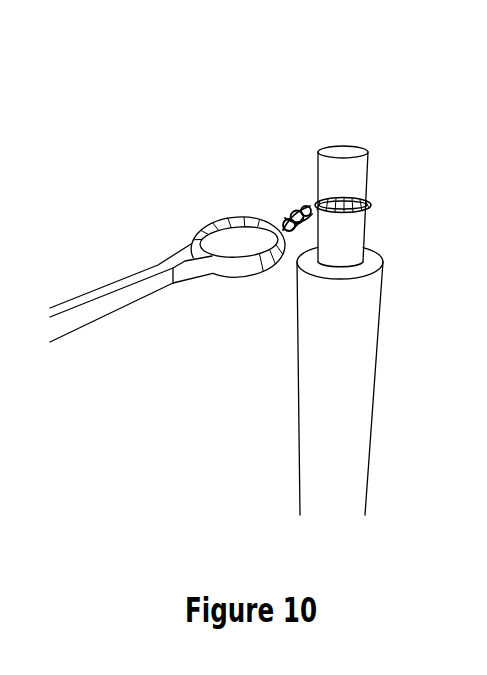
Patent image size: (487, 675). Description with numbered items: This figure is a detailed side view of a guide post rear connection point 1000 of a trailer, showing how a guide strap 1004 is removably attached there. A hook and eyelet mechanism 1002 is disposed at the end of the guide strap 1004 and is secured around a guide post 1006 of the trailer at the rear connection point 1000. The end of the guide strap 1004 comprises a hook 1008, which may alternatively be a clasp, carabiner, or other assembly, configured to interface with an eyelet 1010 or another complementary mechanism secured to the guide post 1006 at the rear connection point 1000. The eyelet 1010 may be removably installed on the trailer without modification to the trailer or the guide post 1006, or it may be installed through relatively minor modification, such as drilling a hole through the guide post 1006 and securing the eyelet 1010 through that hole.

The rear connection point 1000 is at (382, 203).
The hook and eyelet mechanism 1002 is at (259, 207).
The guide strap 1004 is at (170, 286).
The guide post 1006 is at (374, 392).
The hook 1008 is at (283, 212).
The eyelet 1010 is at (316, 203).